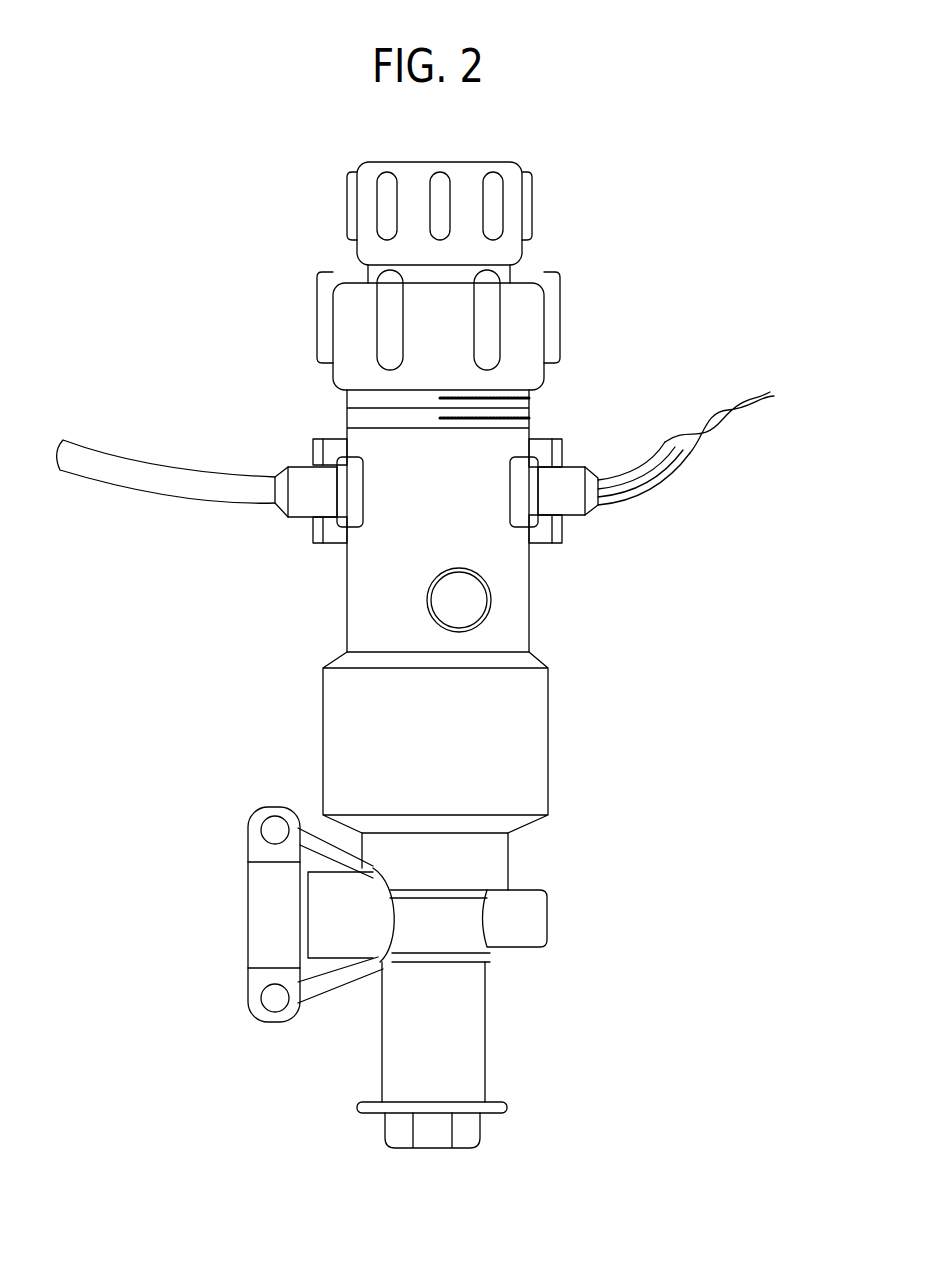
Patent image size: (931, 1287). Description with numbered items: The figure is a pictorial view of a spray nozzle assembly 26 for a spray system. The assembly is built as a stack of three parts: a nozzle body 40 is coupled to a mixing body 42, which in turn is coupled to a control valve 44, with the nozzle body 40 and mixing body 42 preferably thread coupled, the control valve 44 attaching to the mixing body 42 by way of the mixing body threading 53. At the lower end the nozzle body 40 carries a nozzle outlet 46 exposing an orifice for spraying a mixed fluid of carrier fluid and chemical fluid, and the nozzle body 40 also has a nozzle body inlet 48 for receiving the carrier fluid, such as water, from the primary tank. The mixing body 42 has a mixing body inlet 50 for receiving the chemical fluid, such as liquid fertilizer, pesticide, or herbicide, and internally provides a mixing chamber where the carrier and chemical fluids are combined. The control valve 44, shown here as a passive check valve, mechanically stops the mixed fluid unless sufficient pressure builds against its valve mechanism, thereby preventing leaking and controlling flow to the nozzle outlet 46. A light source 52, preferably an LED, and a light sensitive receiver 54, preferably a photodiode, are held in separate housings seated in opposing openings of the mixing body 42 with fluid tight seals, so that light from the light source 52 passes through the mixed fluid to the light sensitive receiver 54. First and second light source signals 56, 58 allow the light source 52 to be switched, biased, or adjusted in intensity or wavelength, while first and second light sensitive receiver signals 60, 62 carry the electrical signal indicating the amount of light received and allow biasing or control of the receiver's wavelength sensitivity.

The spray nozzle assembly 26 is at (640, 142).
The nozzle body 40 is at (478, 1033).
The mixing body 42 is at (363, 615).
The control valve 44 is at (413, 185).
The nozzle outlet 46 is at (427, 1142).
The nozzle body inlet 48 is at (263, 920).
The mixing body inlet 50 is at (475, 603).
The light source 52 is at (333, 470).
The mixing body threading 53 is at (533, 412).
The light sensitive receiver 54 is at (533, 492).
The first light source signal 56 is at (282, 470).
The second light source signal 58 is at (282, 510).
The first light sensitive receiver signal 60 is at (617, 481).
The second light sensitive receiver signal 62 is at (622, 502).